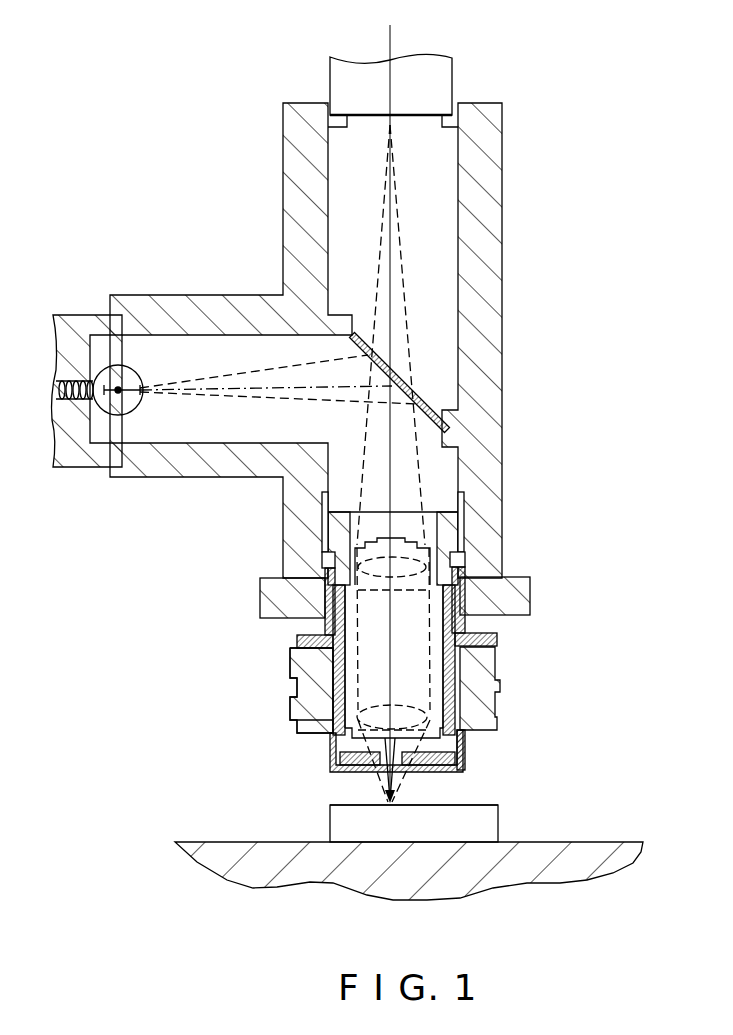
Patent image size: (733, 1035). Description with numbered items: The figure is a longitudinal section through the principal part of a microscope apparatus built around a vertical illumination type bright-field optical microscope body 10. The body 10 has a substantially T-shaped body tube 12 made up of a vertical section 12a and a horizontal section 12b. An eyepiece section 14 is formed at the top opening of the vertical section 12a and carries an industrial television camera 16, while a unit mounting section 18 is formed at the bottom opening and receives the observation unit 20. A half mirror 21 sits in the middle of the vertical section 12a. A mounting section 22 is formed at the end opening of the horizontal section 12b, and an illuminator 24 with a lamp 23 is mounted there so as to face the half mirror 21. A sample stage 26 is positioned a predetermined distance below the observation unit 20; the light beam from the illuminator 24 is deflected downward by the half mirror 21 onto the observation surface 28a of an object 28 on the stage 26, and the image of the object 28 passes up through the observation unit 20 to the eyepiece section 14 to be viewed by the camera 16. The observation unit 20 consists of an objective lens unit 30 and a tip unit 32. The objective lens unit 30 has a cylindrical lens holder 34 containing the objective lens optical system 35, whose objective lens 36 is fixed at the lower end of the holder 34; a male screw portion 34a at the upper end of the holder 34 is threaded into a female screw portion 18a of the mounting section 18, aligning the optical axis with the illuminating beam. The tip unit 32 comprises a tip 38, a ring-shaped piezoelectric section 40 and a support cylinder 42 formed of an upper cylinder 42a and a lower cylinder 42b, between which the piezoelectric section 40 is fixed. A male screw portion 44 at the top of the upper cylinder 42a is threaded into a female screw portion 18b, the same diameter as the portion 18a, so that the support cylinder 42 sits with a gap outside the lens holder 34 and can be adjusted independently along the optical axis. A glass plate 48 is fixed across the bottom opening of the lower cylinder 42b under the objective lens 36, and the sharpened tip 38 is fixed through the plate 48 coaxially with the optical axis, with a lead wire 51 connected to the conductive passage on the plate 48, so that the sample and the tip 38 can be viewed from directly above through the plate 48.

The optical microscope body 10 is at (188, 225).
The body tube 12 is at (359, 340).
The vertical section 12a is at (503, 220).
The horizontal section 12b is at (213, 300).
The eyepiece section 14 is at (310, 110).
The industrial television camera 16 is at (360, 68).
The unit mounting section 18 is at (492, 545).
The female screw portion 18a is at (330, 522).
The female screw portion 18b is at (265, 603).
The observation unit 20 is at (255, 653).
The half mirror 21 is at (405, 380).
The mounting section 22 is at (125, 305).
The lamp 23 is at (135, 404).
The illuminator 24 is at (80, 315).
The sample stage 26 is at (600, 850).
The object 28 is at (500, 812).
The observation surface 28a is at (333, 795).
The objective lens unit 30 is at (476, 747).
The tip unit 32 is at (264, 752).
The lens holder 34 is at (465, 626).
The male screw portion 34a is at (470, 523).
The objective lens optical system 35 is at (528, 603).
The objective lens 36 is at (325, 741).
The tip 38 is at (403, 777).
The piezoelectric section 40 is at (305, 688).
The support cylinder 42 is at (326, 762).
The upper cylinder 42a is at (495, 646).
The lower cylinder 42b is at (470, 737).
The male screw portion 44 is at (318, 622).
The glass plate 48 is at (367, 773).
The lead wire 51 is at (445, 786).